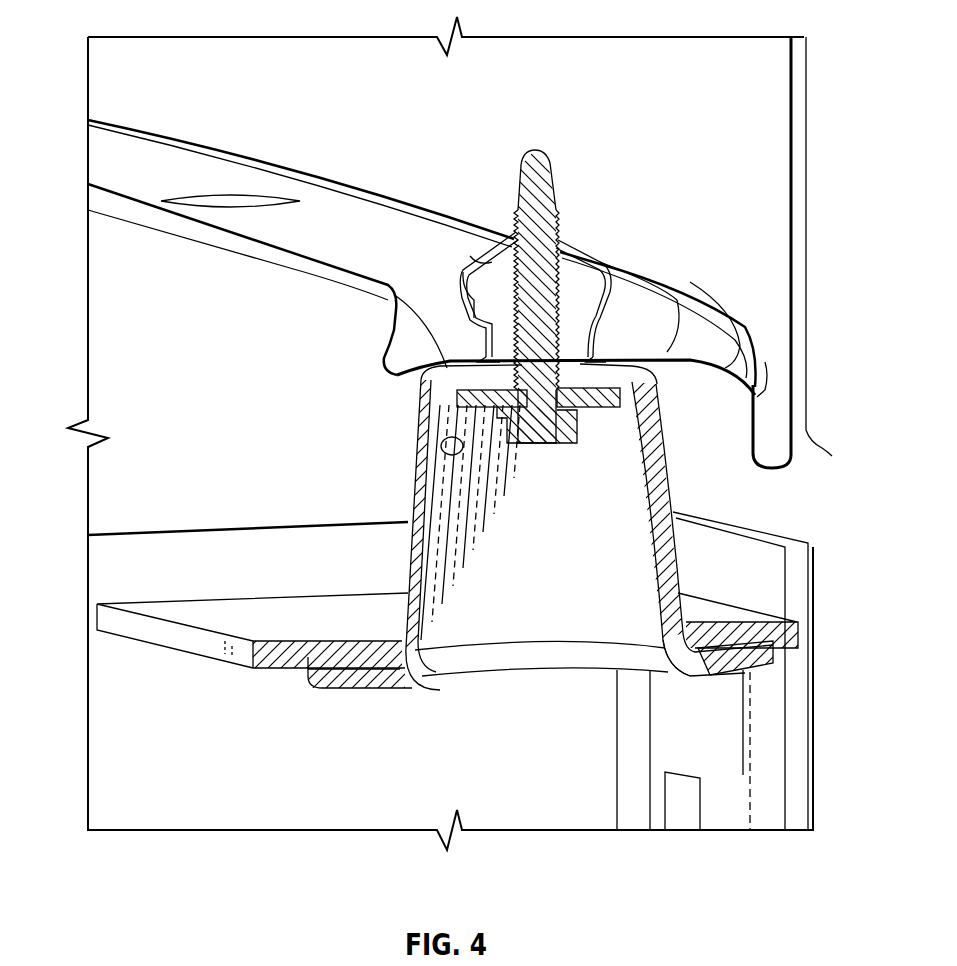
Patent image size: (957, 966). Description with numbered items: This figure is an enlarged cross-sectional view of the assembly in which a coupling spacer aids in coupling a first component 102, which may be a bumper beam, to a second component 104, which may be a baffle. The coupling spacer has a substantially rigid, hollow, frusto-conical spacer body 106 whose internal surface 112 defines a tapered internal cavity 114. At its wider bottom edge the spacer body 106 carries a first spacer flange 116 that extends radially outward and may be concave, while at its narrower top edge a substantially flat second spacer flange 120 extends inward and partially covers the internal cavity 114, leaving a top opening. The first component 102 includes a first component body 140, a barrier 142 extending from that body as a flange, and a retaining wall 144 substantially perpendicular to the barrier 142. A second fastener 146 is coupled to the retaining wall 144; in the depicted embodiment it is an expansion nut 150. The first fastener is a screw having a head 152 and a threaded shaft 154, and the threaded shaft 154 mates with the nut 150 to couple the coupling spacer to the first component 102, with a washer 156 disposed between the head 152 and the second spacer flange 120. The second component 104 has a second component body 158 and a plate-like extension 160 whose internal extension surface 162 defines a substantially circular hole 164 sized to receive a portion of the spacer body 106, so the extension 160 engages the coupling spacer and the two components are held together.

The first component 102 is at (665, 45).
The second component 104 is at (813, 780).
The spacer body 106 is at (658, 447).
The internal surface 112 is at (441, 440).
The internal cavity 114 is at (453, 502).
The first spacer flange 116 is at (720, 680).
The second spacer flange 120 is at (443, 368).
The first component body 140 is at (806, 72).
The barrier 142 is at (832, 456).
The retaining wall 144 is at (335, 203).
The second fastener 146 is at (605, 265).
The nut 150 is at (493, 250).
The head 152 is at (545, 434).
The threaded shaft 154 is at (550, 212).
The washer 156 is at (712, 352).
The second component body 158 is at (105, 733).
The extension 160 is at (747, 620).
The internal extension surface 162 is at (413, 650).
The hole 164 is at (735, 668).